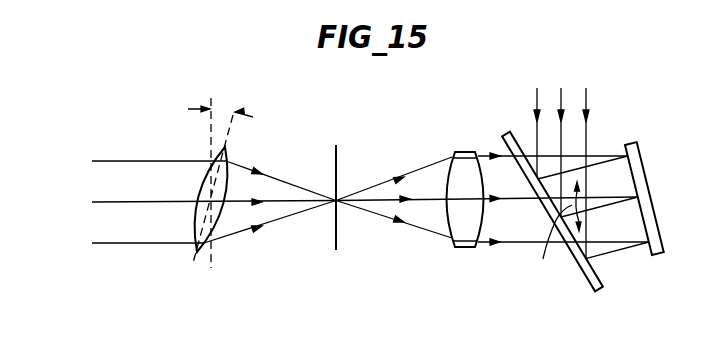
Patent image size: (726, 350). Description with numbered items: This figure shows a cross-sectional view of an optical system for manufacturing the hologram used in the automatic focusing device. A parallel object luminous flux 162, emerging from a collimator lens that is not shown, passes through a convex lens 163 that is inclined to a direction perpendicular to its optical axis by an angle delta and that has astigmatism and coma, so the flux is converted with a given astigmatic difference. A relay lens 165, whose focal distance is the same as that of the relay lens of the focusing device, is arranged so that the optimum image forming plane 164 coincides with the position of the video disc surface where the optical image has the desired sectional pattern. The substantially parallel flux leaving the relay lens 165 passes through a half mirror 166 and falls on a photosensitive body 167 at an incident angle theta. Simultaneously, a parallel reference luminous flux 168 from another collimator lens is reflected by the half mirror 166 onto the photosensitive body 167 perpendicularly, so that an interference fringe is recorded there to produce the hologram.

The parallel object luminous flux 162 is at (84, 155).
The convex lens 163 is at (222, 215).
The optimum image forming plane 164 is at (340, 236).
The relay lens 165 is at (467, 167).
The half mirror 166 is at (602, 291).
The photosensitive body 167 is at (657, 256).
The parallel reference luminous flux 168 is at (592, 82).